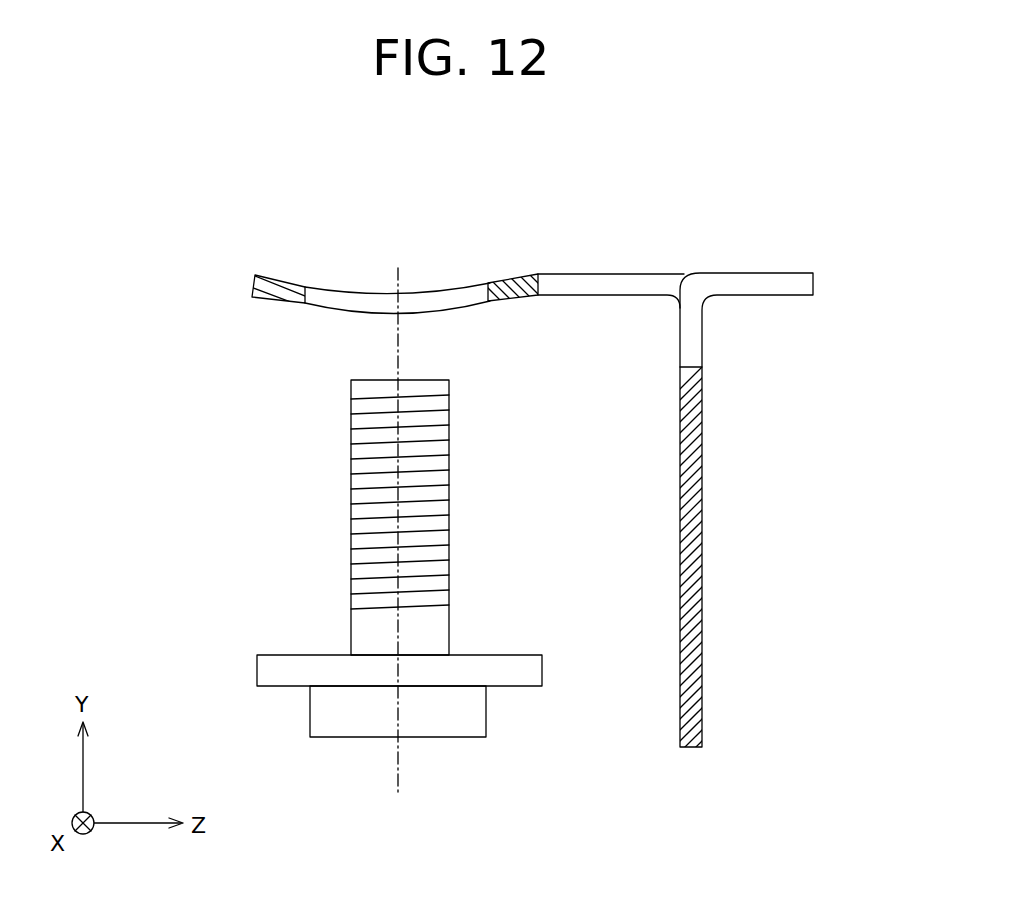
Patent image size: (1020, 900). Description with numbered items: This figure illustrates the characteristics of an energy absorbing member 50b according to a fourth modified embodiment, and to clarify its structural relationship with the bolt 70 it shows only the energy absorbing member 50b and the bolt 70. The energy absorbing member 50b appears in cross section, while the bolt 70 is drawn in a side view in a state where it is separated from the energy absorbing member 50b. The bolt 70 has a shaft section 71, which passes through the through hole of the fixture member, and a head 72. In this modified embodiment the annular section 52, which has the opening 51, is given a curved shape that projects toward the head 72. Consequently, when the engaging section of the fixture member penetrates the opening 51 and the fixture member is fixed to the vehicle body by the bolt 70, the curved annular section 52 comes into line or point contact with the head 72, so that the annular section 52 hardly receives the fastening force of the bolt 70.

The energy absorbing member 50b is at (765, 224).
The opening 51 is at (331, 291).
The annular section 52 is at (275, 276).
The bolt 70 is at (310, 558).
The shaft section 71 is at (350, 514).
The head 72 is at (351, 676).